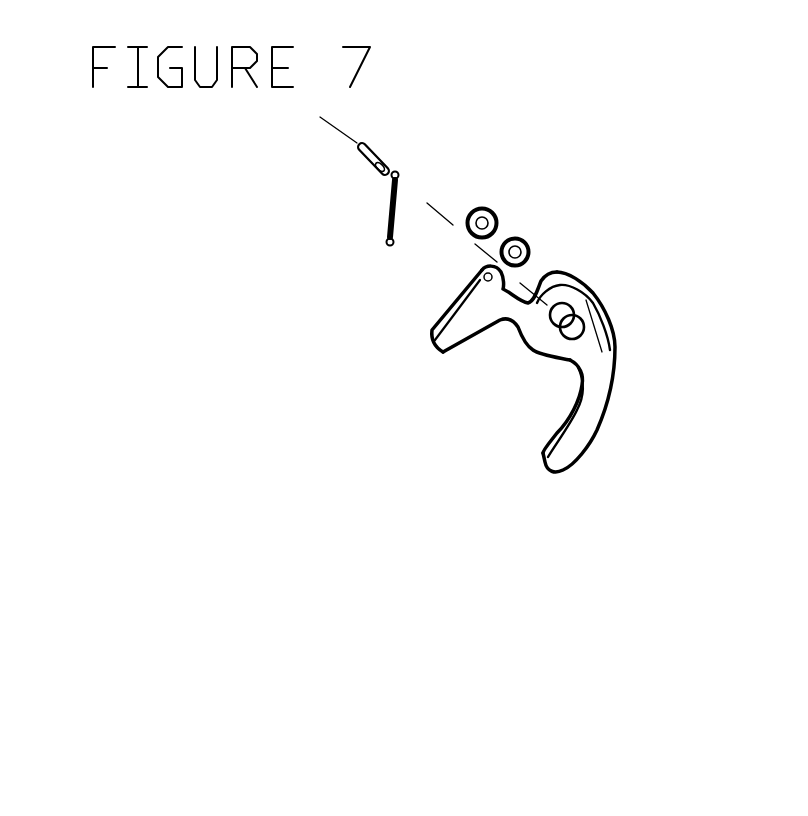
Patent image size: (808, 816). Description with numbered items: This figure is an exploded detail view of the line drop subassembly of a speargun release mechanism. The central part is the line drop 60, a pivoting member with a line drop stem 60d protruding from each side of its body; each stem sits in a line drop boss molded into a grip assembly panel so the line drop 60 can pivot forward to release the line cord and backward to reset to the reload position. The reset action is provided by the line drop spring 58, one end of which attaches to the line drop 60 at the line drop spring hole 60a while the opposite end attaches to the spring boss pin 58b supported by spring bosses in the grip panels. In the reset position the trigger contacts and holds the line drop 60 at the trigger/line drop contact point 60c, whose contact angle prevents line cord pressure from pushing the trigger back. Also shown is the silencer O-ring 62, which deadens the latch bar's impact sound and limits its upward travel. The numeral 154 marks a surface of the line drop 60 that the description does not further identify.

The line drop spring 58 is at (403, 185).
The spring boss pin 58b is at (377, 150).
The silencer O-ring 62 is at (495, 215).
The line drop 60 is at (524, 369).
The line drop spring hole 60a is at (480, 272).
The trigger/line drop contact point 60c is at (467, 340).
The line drop stem 60d is at (588, 310).
The hook cam surface 154 is at (616, 432).